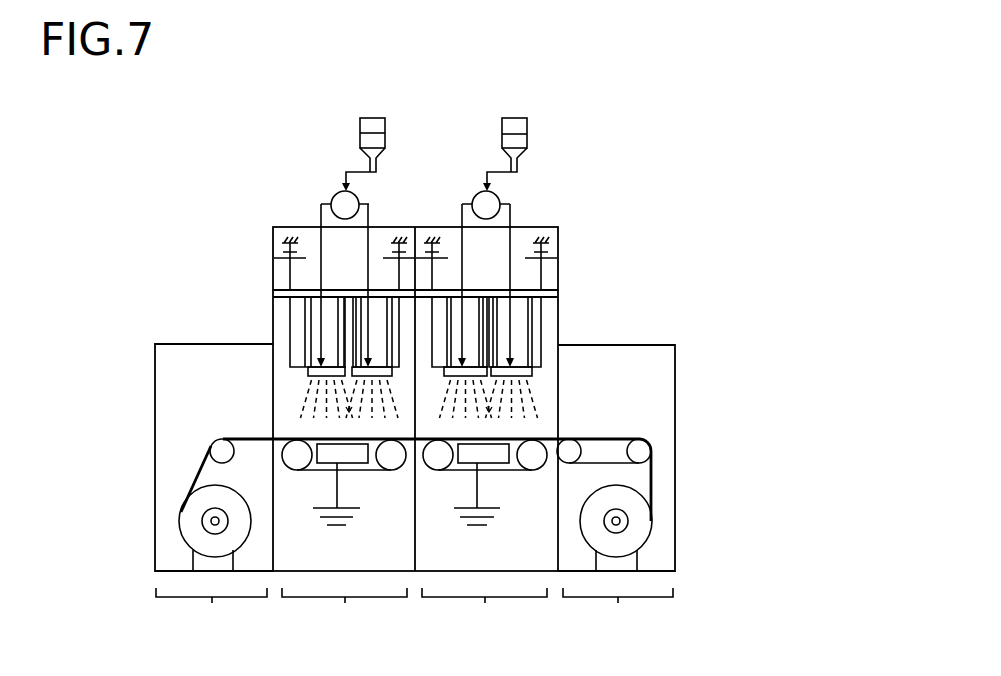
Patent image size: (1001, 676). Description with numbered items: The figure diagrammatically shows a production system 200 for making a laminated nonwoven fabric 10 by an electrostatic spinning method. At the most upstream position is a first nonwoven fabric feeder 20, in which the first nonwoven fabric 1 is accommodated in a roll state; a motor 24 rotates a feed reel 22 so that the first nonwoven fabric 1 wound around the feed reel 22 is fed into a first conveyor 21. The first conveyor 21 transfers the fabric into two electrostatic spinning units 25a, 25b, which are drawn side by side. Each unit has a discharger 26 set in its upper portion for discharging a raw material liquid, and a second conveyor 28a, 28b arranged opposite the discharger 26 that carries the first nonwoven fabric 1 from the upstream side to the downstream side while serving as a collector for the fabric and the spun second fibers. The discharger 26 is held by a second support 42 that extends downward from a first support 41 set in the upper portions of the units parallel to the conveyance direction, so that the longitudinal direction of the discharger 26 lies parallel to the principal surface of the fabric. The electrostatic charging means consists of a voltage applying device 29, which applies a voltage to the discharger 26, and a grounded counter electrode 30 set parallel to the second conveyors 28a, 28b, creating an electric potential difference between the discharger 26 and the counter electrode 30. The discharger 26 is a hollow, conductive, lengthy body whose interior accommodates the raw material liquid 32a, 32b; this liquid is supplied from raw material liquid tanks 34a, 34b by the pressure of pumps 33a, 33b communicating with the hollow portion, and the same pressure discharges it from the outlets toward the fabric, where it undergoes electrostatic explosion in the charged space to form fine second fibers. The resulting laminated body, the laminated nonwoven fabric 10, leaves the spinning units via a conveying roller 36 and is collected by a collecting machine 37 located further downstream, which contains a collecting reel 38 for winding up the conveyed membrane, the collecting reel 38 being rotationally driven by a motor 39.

The production system 200 is at (115, 165).
The first nonwoven fabric 1 is at (595, 439).
The laminated nonwoven fabric 10 is at (193, 481).
The first nonwoven fabric feeder 20 is at (616, 490).
The first conveyor 21 is at (637, 447).
The feed reel 22 is at (642, 530).
The motor 24 is at (625, 562).
The electrostatic spinning unit 25a is at (484, 612).
The electrostatic spinning unit 25b is at (344, 612).
The discharger 26 is at (307, 376).
The second conveyor 28a is at (450, 470).
The second conveyor 28b is at (313, 470).
The voltage applying device 29 is at (542, 275).
The counter electrode 30 is at (323, 450).
The raw material liquid 32a is at (513, 142).
The raw material liquid 32b is at (372, 138).
The pump 33a is at (498, 201).
The pump 33b is at (335, 199).
The raw material liquid tank 34a is at (527, 125).
The raw material liquid tank 34b is at (360, 125).
The conveying roller 36 is at (215, 447).
The collecting machine 37 is at (214, 490).
The collecting reel 38 is at (188, 530).
The motor 39 is at (203, 561).
The first support 41 is at (281, 292).
The second support 42 is at (308, 318).